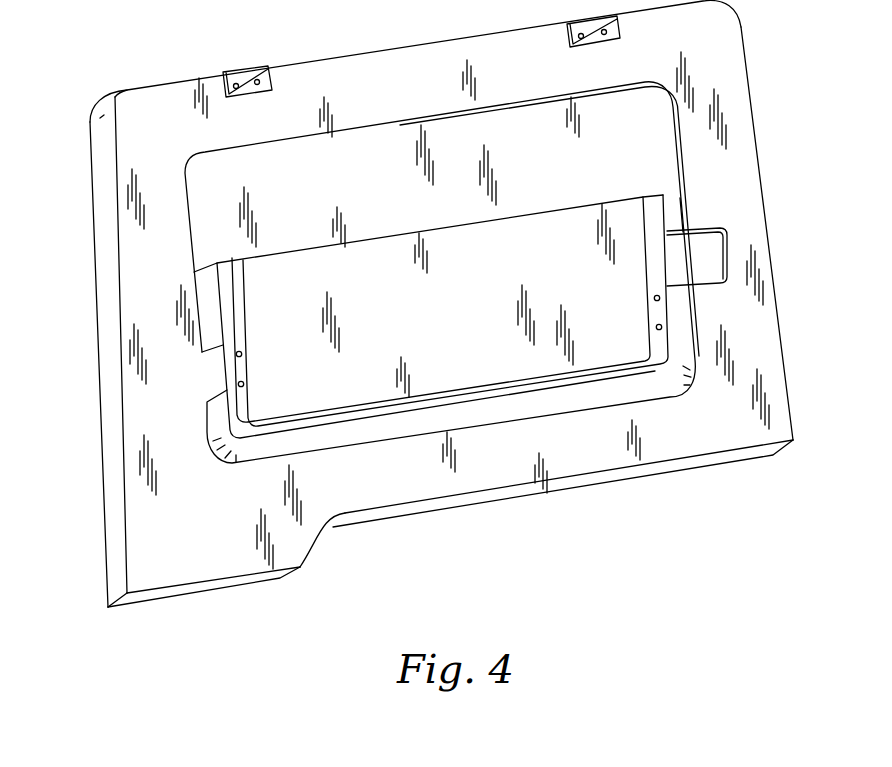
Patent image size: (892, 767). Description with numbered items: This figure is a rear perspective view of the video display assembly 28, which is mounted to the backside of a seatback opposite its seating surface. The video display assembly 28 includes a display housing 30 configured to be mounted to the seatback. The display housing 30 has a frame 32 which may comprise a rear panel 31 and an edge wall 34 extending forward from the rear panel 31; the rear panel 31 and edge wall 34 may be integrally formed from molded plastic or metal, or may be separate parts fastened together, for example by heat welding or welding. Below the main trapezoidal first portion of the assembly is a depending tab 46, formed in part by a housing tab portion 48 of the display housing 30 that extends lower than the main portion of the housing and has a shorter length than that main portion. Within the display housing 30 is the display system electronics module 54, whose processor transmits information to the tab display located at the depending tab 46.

The video display assembly 28 is at (100, 90).
The display housing 30 is at (175, 276).
The rear panel 31 is at (725, 62).
The frame 32 is at (763, 345).
The edge wall 34 is at (115, 450).
The depending tab 46 is at (193, 557).
The housing tab portion 48 is at (230, 560).
The display system electronics module 54 is at (620, 228).